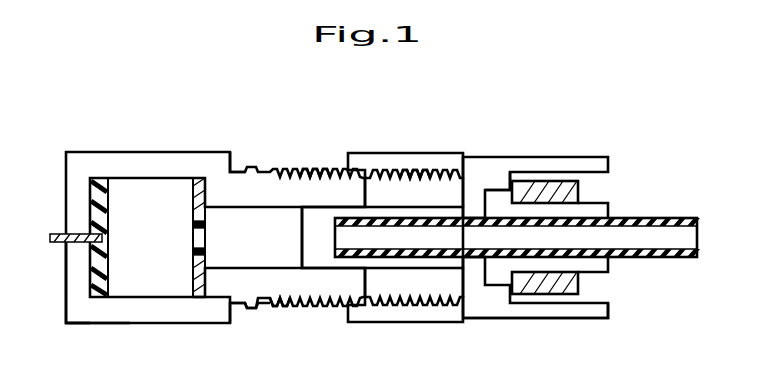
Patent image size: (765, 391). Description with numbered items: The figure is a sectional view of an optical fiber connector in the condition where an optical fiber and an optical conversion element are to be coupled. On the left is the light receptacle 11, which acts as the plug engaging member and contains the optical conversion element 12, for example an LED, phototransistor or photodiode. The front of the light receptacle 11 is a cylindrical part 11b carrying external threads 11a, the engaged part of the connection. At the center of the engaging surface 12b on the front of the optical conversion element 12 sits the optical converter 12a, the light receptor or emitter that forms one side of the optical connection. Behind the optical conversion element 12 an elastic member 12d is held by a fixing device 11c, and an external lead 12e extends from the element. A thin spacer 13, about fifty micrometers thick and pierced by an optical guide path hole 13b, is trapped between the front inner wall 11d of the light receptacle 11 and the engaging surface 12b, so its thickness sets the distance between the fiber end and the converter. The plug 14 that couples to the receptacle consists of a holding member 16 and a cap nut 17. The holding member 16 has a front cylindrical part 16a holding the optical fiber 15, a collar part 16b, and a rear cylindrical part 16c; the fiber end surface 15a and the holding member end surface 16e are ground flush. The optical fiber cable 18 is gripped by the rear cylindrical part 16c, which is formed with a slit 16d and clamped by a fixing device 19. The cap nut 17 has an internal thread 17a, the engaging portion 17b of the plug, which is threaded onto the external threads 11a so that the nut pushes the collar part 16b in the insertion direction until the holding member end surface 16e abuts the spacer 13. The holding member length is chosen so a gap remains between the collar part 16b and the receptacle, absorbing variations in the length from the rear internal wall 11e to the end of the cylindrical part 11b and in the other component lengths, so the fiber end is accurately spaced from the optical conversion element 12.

The light receptacle 11 is at (136, 152).
The external threads 11a is at (328, 177).
The cylindrical part 11b is at (300, 305).
The fixing device 11c is at (76, 278).
The front inner wall 11d is at (233, 170).
The rear internal wall 11e is at (82, 321).
The optical conversion element 12 is at (136, 298).
The optical converter 12a is at (243, 306).
The engaging surface 12b is at (208, 303).
The elastic member 12d is at (92, 193).
The external lead 12e is at (55, 242).
The spacer 13 is at (197, 186).
The optical guide path hole 13b is at (300, 232).
The plug 14 is at (523, 152).
The optical fiber 15 is at (300, 238).
The fiber end surface 15a is at (293, 206).
The holding member 16 is at (440, 280).
The front cylindrical part 16a is at (385, 265).
The collar part 16b is at (478, 280).
The rear cylindrical part 16c is at (608, 266).
The slit 16d is at (608, 210).
The holding member end surface 16e is at (304, 250).
The cap nut 17 is at (568, 166).
The internal thread 17a is at (493, 183).
The engaging portion 17b is at (420, 176).
The optical fiber cable 18 is at (683, 214).
The fixing device 19 is at (548, 296).